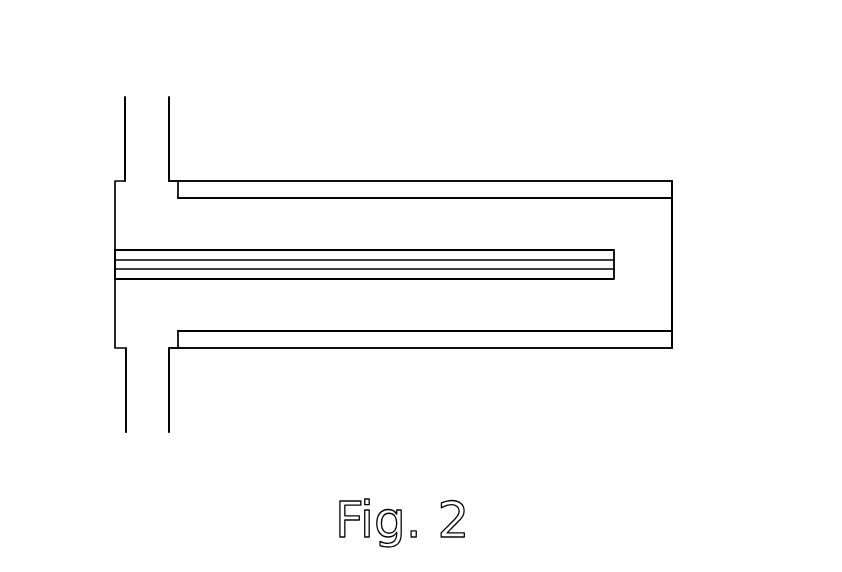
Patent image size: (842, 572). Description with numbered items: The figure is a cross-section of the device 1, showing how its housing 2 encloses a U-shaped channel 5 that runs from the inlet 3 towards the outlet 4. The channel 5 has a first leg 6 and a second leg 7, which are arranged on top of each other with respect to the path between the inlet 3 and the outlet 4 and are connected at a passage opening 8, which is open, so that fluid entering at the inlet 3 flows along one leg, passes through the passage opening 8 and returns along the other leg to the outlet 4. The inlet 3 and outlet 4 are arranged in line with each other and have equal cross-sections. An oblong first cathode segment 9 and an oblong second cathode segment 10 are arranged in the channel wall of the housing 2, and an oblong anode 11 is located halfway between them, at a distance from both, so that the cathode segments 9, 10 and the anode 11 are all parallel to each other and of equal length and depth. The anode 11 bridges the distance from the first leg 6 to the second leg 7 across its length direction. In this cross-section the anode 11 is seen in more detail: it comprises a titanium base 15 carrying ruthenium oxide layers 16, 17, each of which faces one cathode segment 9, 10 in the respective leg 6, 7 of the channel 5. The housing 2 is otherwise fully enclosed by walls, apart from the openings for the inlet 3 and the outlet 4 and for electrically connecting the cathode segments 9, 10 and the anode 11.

The device 1 is at (532, 80).
The housing 2 is at (676, 265).
The inlet 3 is at (147, 422).
The outlet 4 is at (148, 106).
The channel 5 is at (459, 236).
The first leg 6 is at (373, 300).
The second leg 7 is at (363, 210).
The passage opening 8 is at (637, 270).
The first cathode segment 9 is at (488, 337).
The second cathode segment 10 is at (590, 190).
The anode 11 is at (122, 264).
The titanium base 15 is at (142, 266).
The ruthenium oxide layer 16 is at (270, 270).
The ruthenium oxide layer 17 is at (210, 257).